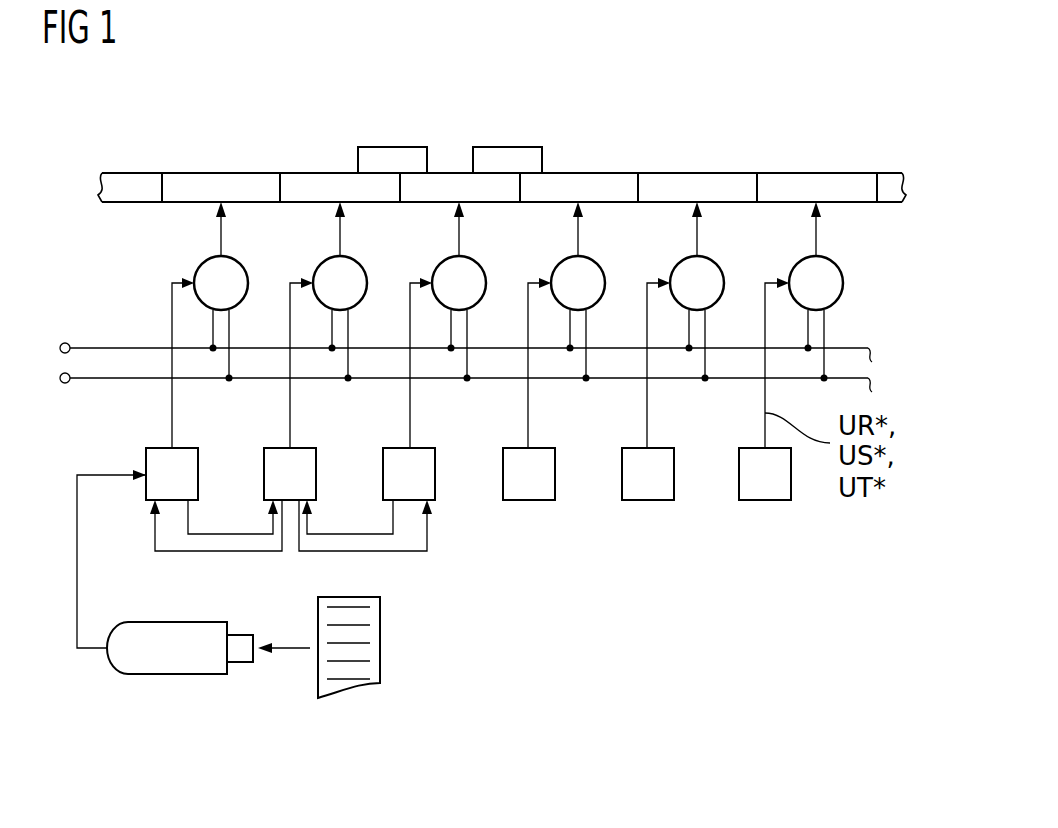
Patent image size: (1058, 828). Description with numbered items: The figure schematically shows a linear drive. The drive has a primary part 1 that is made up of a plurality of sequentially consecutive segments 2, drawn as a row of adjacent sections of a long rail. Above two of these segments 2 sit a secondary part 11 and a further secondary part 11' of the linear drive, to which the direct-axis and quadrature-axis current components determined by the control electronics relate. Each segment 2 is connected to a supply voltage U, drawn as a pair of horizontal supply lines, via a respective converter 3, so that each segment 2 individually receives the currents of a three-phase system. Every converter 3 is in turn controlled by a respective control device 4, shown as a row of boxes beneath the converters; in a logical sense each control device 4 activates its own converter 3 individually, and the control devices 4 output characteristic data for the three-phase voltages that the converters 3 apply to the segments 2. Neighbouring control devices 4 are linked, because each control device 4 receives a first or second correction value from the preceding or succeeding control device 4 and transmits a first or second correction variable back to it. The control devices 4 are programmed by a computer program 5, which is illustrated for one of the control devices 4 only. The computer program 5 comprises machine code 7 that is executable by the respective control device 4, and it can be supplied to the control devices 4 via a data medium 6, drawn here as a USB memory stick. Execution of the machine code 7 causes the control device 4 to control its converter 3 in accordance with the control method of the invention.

The primary part 1 is at (822, 108).
The segment 2 is at (298, 181).
The converter 3 is at (196, 272).
The control device 4 is at (146, 457).
The computer program 5 is at (358, 690).
The data medium 6 is at (172, 674).
The machine code 7 is at (365, 620).
The secondary part 11 is at (392, 113).
The secondary part 11' is at (507, 113).
The supply voltage U is at (454, 367).